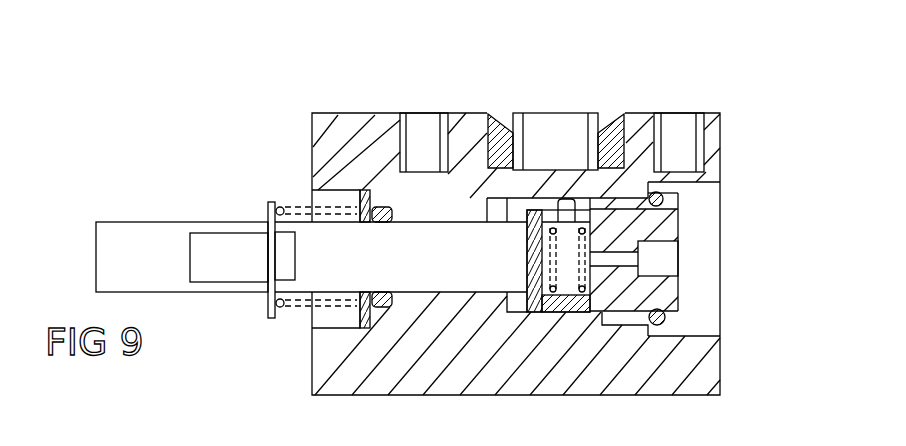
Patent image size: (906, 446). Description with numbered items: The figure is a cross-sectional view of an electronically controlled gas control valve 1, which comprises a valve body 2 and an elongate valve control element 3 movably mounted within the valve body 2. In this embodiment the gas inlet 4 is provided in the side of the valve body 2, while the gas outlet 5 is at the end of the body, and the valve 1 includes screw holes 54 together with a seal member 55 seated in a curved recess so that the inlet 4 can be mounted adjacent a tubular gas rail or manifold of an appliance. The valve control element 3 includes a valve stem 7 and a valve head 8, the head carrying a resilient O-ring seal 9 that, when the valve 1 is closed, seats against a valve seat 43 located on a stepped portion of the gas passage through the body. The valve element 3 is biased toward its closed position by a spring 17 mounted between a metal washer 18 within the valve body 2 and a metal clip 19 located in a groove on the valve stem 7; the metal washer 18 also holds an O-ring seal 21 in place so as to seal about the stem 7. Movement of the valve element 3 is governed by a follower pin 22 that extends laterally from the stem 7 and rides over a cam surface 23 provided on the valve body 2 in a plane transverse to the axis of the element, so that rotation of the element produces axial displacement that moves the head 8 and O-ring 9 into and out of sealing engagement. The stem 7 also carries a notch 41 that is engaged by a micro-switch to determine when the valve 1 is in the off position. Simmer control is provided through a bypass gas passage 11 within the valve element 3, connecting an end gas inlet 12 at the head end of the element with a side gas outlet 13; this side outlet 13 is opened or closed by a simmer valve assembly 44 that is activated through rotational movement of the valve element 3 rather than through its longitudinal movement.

The gas control valve 1 is at (182, 108).
The valve body 2 is at (548, 378).
The valve control element 3 is at (230, 190).
The gas inlet 4 is at (540, 133).
The gas outlet 5 is at (712, 196).
The valve stem 7 is at (128, 243).
The valve head 8 is at (667, 220).
The O-ring seal 9 is at (667, 313).
The bypass gas passage 11 is at (652, 268).
The gas inlet of the valve element 12 is at (668, 248).
The gas outlet of the valve element 13 is at (575, 196).
The spring 17 is at (299, 210).
The metal washer 18 is at (366, 200).
The metal clip 19 is at (268, 305).
The O-ring seal 21 is at (382, 208).
The follower pin 22 is at (497, 196).
The cam surface 23 is at (511, 302).
The notch 41 is at (240, 273).
The valve seat 43 is at (653, 328).
The simmer valve assembly 44 is at (517, 258).
The screw holes 54 is at (426, 130).
The seal member 55 is at (612, 130).